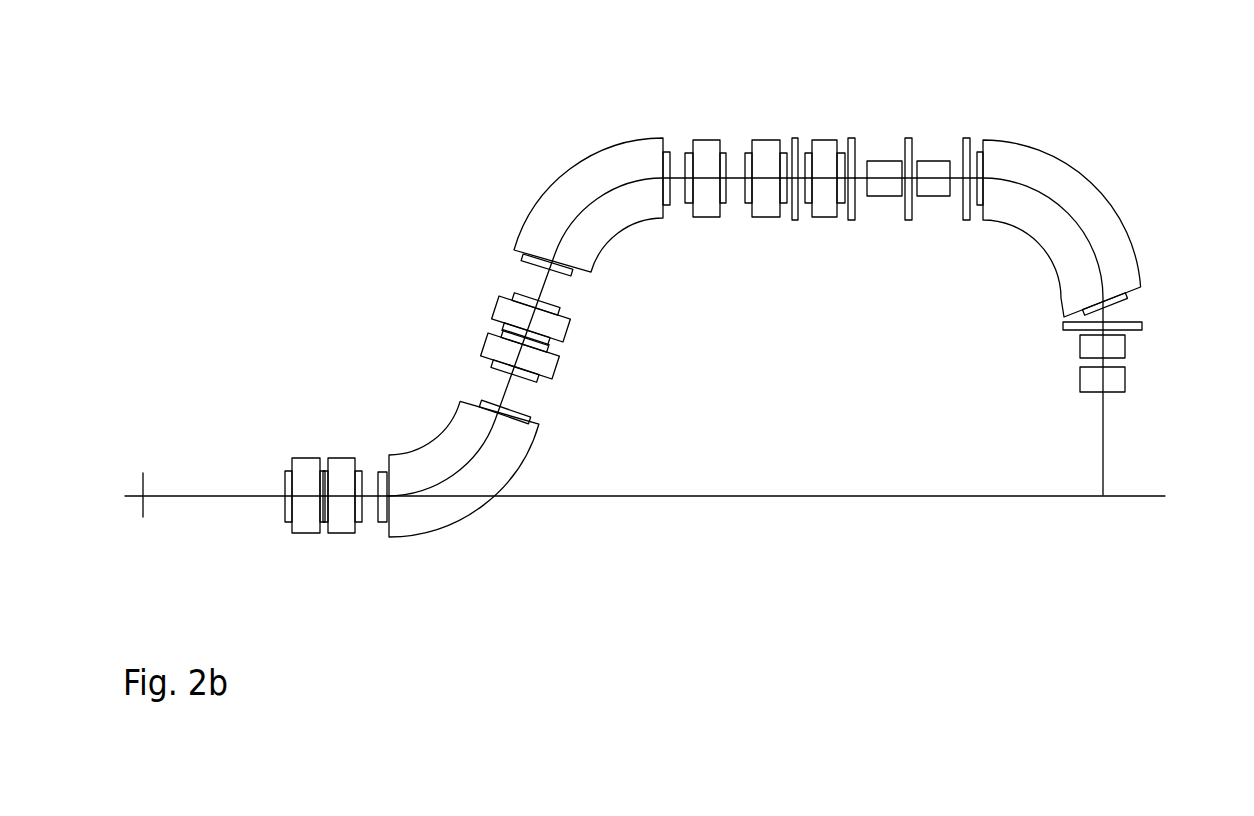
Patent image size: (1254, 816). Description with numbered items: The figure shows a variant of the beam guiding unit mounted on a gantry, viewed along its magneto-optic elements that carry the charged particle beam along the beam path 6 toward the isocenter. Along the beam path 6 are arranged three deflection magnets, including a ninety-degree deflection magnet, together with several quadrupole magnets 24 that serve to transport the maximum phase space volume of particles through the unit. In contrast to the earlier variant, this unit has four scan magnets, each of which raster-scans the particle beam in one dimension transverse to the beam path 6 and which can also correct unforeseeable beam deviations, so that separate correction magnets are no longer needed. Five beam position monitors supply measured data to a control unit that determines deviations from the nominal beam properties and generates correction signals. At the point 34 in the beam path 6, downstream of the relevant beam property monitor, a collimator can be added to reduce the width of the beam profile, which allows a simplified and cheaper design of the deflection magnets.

The beam path 6 is at (503, 385).
The quadrupole magnets 24 is at (340, 535).
The point in the beam path 34 is at (863, 137).